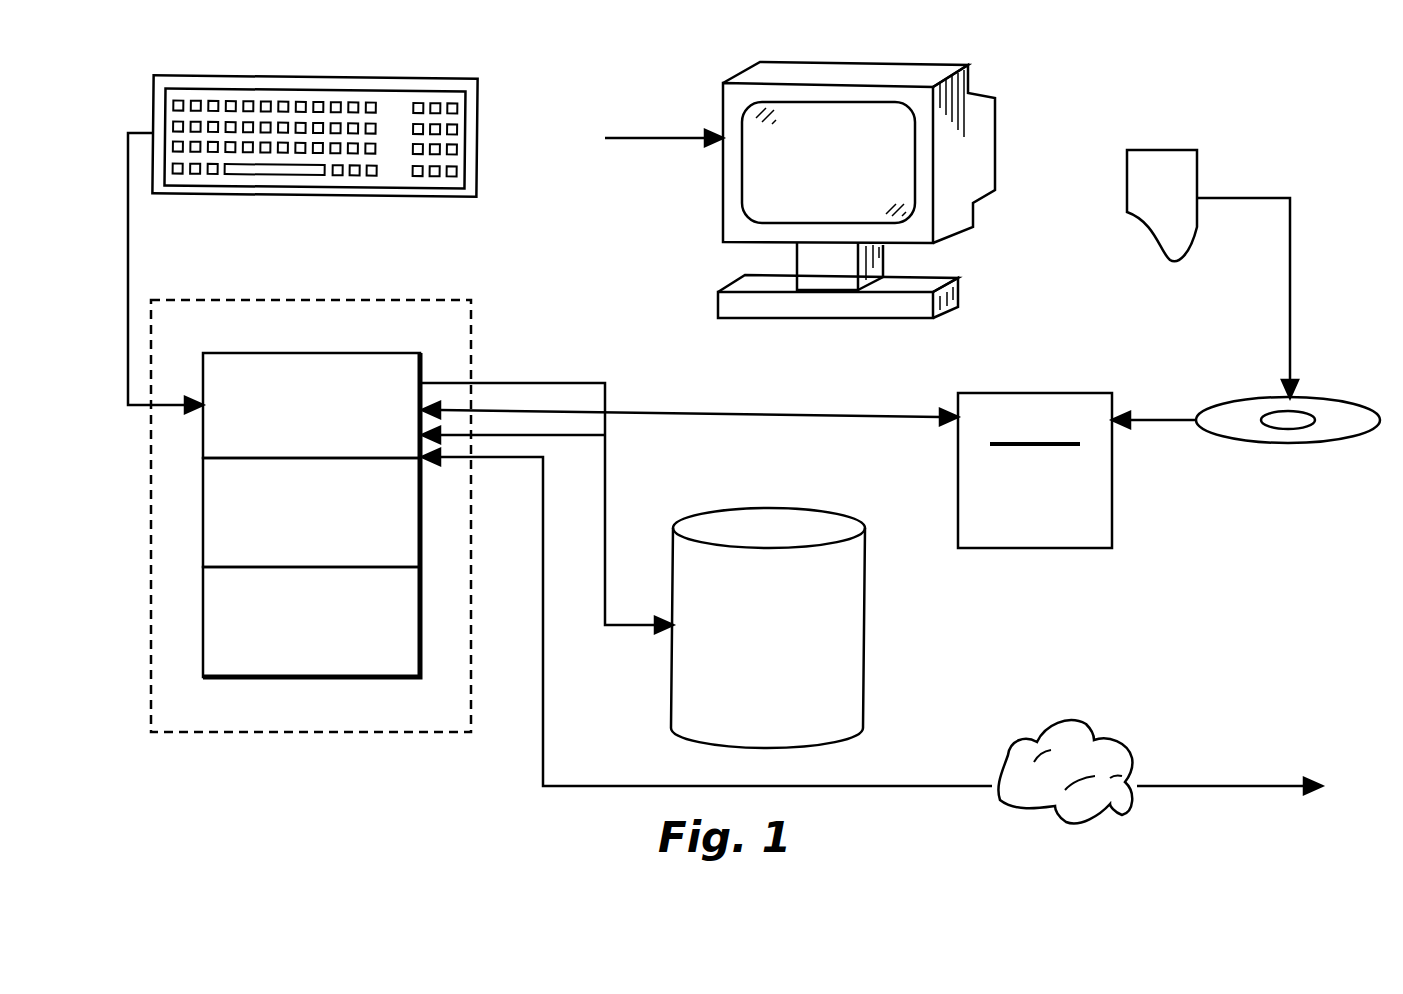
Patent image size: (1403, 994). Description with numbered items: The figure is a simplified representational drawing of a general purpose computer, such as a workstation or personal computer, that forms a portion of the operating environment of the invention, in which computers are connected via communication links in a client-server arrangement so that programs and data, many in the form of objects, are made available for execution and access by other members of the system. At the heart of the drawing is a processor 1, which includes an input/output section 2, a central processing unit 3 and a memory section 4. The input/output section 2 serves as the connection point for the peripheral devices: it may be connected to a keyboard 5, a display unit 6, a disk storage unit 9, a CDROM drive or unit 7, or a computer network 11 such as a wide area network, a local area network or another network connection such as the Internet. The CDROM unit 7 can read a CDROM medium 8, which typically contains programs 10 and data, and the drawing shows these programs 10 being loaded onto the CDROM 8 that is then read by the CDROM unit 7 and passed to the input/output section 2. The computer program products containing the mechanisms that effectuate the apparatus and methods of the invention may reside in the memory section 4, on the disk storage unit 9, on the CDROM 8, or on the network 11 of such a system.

The processor 1 is at (427, 300).
The input/output section 2 is at (292, 358).
The central processing unit 3 is at (422, 532).
The memory section 4 is at (422, 664).
The keyboard 5 is at (457, 83).
The display unit 6 is at (922, 73).
The CDROM drive or unit 7 is at (989, 393).
The CDROM medium 8 is at (1262, 400).
The disk storage unit 9 is at (863, 603).
The programs 10 is at (1140, 160).
The computer network 11 is at (1068, 730).